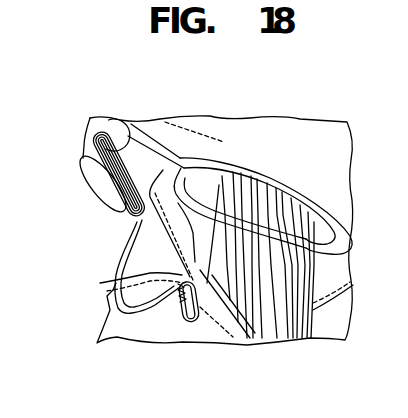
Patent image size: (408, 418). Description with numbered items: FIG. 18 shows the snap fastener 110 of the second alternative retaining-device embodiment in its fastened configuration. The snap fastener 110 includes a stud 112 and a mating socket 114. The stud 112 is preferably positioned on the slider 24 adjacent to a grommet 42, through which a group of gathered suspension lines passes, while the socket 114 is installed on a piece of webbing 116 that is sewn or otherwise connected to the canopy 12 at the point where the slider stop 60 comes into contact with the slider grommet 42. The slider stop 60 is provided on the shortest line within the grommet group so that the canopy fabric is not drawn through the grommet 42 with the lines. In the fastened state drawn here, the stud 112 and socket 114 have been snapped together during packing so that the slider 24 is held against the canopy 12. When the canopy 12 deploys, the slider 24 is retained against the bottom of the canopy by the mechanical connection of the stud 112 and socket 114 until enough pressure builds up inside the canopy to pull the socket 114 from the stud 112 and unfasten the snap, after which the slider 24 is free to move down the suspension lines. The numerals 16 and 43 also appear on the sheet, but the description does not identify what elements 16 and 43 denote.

The canopy 12 is at (207, 330).
The fibers 16 is at (313, 330).
The slider 24 is at (291, 137).
The grommet 42 is at (316, 223).
The ring portion 43 is at (360, 273).
The slider stop 60 is at (203, 190).
The snap fastener 110 is at (86, 201).
The stud 112 is at (118, 128).
The socket 114 is at (80, 172).
The webbing 116 is at (100, 283).